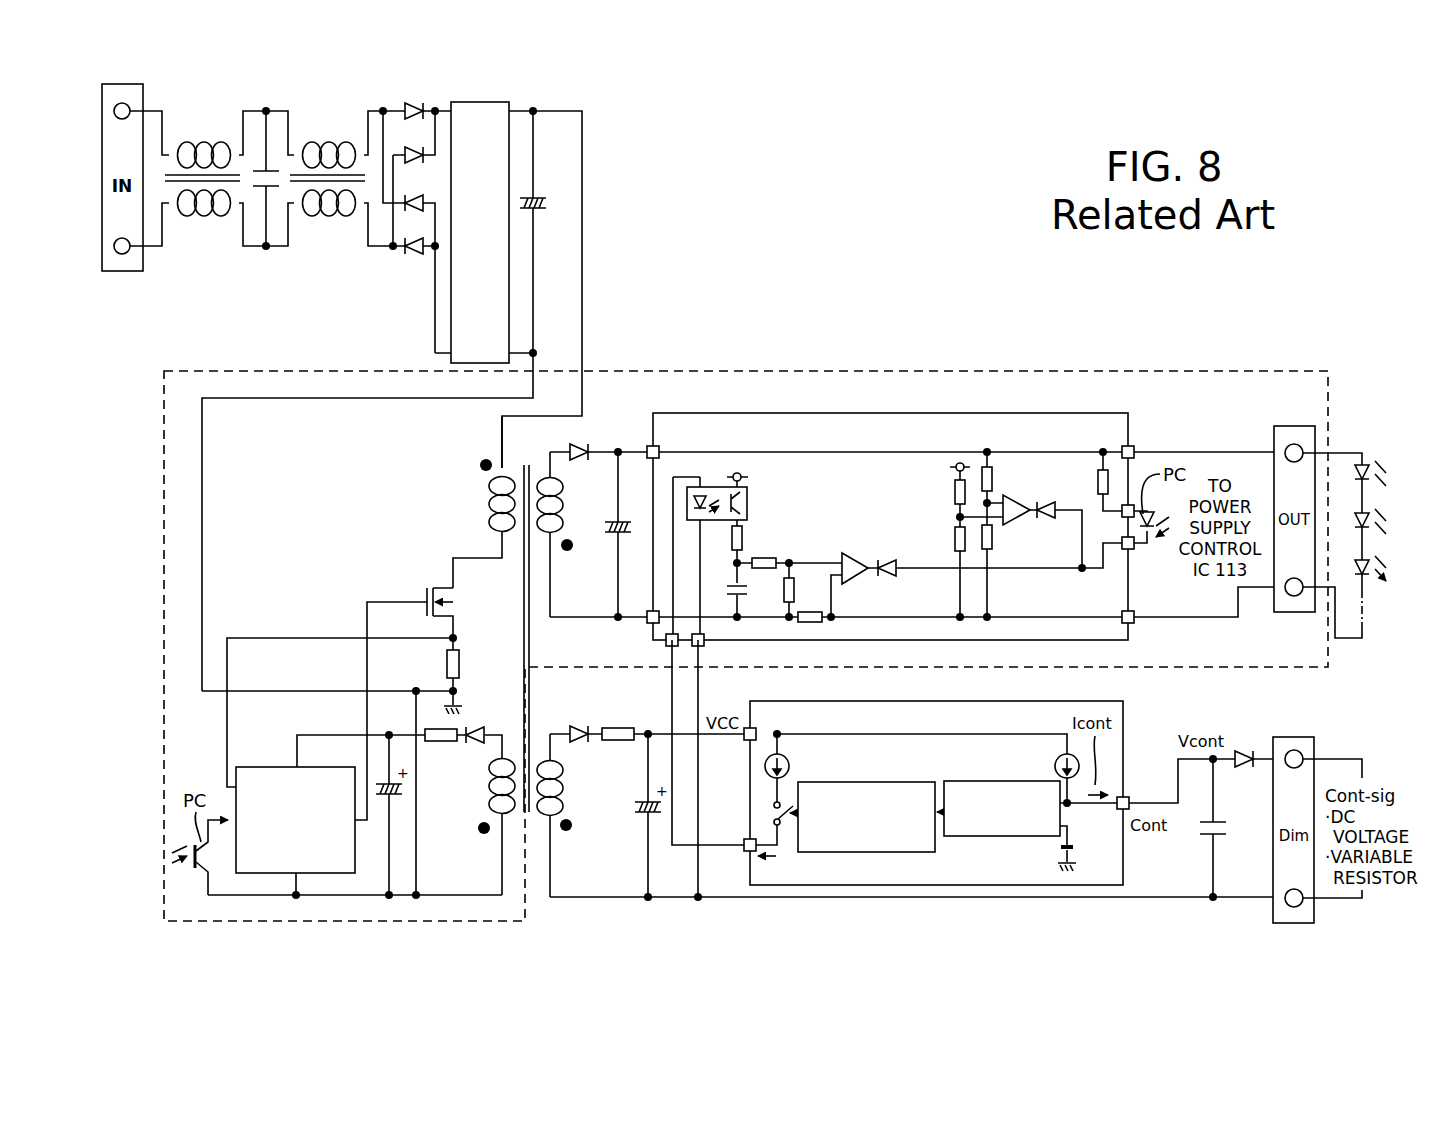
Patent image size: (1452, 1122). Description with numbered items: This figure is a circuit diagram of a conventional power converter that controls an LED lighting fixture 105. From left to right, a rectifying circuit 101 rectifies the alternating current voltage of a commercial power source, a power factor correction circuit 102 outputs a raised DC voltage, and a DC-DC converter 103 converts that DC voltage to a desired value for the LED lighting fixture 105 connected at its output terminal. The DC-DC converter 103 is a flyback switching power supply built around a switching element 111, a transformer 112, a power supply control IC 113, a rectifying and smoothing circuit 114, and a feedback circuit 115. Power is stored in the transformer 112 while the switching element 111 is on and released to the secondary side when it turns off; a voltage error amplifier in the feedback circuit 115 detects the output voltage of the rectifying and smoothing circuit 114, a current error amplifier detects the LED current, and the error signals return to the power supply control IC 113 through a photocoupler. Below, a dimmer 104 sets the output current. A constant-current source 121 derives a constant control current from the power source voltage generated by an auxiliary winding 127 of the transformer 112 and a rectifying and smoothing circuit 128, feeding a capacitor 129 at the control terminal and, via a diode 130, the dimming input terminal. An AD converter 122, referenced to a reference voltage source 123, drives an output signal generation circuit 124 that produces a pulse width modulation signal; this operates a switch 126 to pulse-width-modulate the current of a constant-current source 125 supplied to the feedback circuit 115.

The rectifying circuit 101 is at (425, 262).
The power factor correction circuit 102 is at (481, 102).
The DC-DC converter 103 is at (932, 371).
The dimmer 104 is at (875, 701).
The LED lighting fixture 105 is at (1367, 456).
The switching element 111 is at (443, 580).
The transformer 112 is at (527, 456).
The power supply control IC 113 is at (266, 766).
The rectifying and smoothing circuit 114 is at (636, 437).
The feedback circuit 115 is at (840, 413).
The constant-current source 121 is at (1056, 766).
The AD converter 122 is at (947, 838).
The reference voltage source 123 is at (1060, 843).
The output signal generation circuit 124 is at (851, 853).
The constant-current source 125 is at (791, 759).
The switch 126 is at (770, 814).
The auxiliary winding 127 is at (563, 786).
The rectifying and smoothing circuit 128 is at (658, 722).
The capacitor 129 is at (1228, 829).
The diode 130 is at (1244, 751).